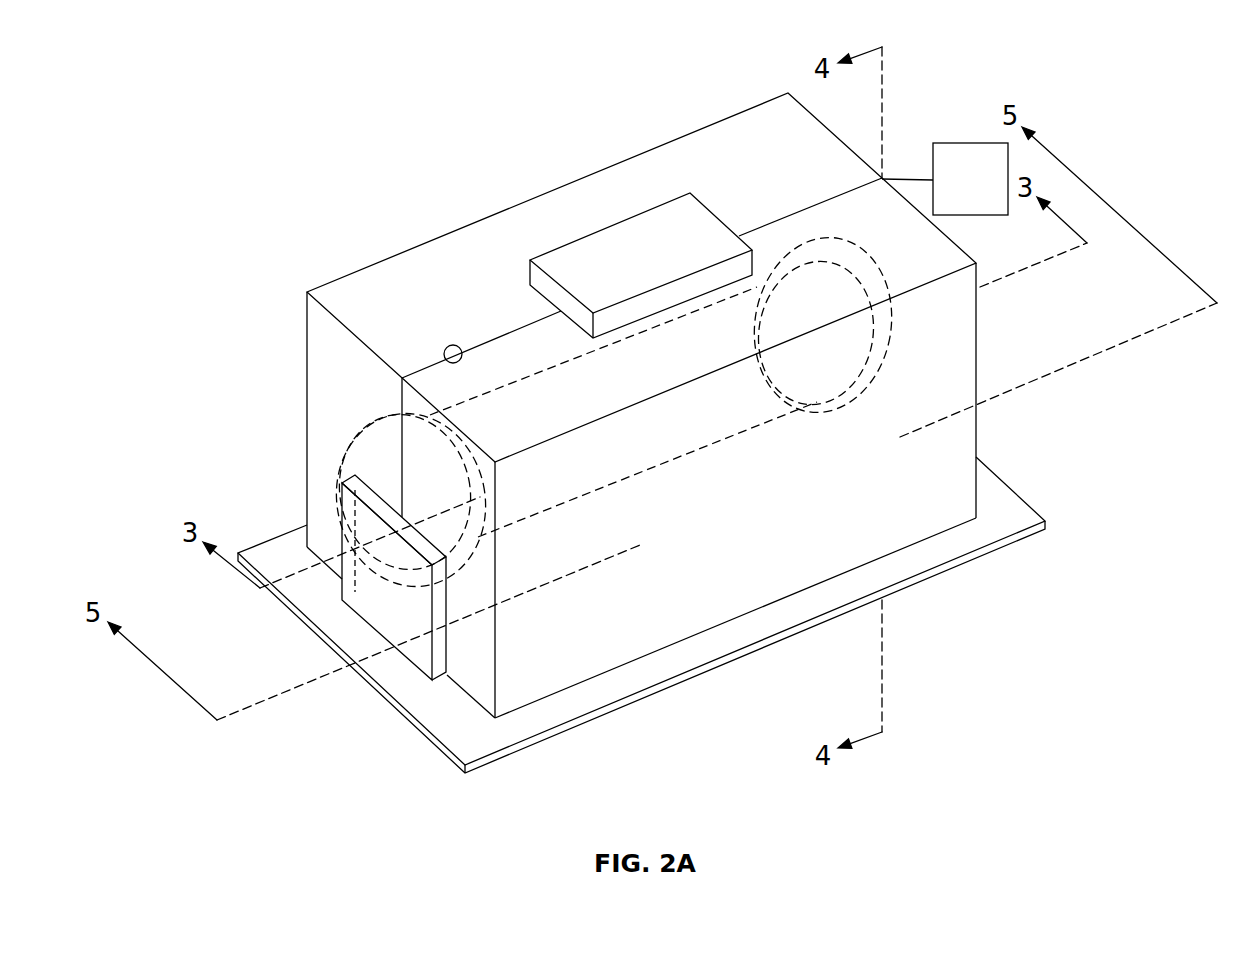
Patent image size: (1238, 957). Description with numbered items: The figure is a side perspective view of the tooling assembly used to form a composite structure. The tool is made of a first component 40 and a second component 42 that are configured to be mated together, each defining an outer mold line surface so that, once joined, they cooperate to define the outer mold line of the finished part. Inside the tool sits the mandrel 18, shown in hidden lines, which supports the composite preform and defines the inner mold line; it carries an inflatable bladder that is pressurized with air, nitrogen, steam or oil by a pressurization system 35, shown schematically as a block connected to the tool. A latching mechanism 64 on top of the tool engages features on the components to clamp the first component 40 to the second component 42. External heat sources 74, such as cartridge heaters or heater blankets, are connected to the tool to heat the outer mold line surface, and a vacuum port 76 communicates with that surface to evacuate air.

The mandrel 18 is at (897, 317).
The pressurization system 35 is at (954, 195).
The first component 40 is at (490, 237).
The second component 42 is at (970, 423).
The latching mechanism 64 is at (615, 245).
The external heat source 74 is at (387, 593).
The vacuum port 76 is at (453, 345).